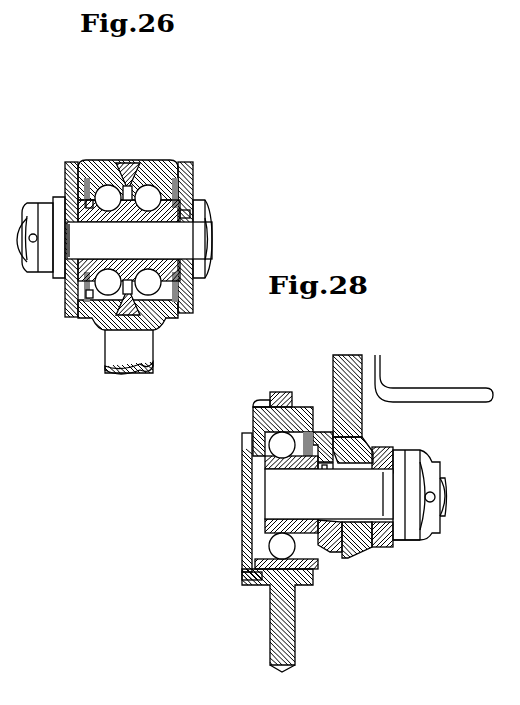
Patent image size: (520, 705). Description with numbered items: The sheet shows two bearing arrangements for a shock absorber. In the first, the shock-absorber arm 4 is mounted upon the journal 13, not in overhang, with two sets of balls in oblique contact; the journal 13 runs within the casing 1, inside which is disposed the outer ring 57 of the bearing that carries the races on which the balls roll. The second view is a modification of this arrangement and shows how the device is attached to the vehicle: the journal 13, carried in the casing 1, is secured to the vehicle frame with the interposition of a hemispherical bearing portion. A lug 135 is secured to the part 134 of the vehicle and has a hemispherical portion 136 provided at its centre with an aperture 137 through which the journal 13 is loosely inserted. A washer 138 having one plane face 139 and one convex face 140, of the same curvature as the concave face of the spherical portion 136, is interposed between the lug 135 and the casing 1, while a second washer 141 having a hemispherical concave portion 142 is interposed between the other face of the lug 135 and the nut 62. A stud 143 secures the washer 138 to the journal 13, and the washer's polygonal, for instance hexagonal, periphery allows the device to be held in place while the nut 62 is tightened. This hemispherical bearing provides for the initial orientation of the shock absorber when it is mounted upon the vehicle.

In FIG. 26, the casing 1 is at (113, 162).
In FIG. 28, the casing 1 is at (305, 600).
In FIG. 26, the shock-absorber arm 4 is at (72, 168).
In FIG. 26, the outer ring 57 is at (140, 162).
In FIG. 26, the journal 13 is at (152, 233).
In FIG. 28, the journal 13 is at (337, 505).
In FIG. 28, the part of the vehicle 134 is at (377, 390).
In FIG. 28, the lug 135 is at (333, 408).
In FIG. 28, the hemispherical portion 136 is at (367, 553).
In FIG. 28, the aperture 137 is at (360, 470).
In FIG. 28, the washer 138 is at (333, 563).
In FIG. 28, the plane face 139 is at (248, 410).
In FIG. 28, the convex face 140 is at (343, 422).
In FIG. 28, the second washer 141 is at (398, 544).
In FIG. 28, the hemispherical concave portion 142 is at (372, 448).
In FIG. 28, the stud 143 is at (245, 456).
In FIG. 28, the nut 62 is at (428, 511).